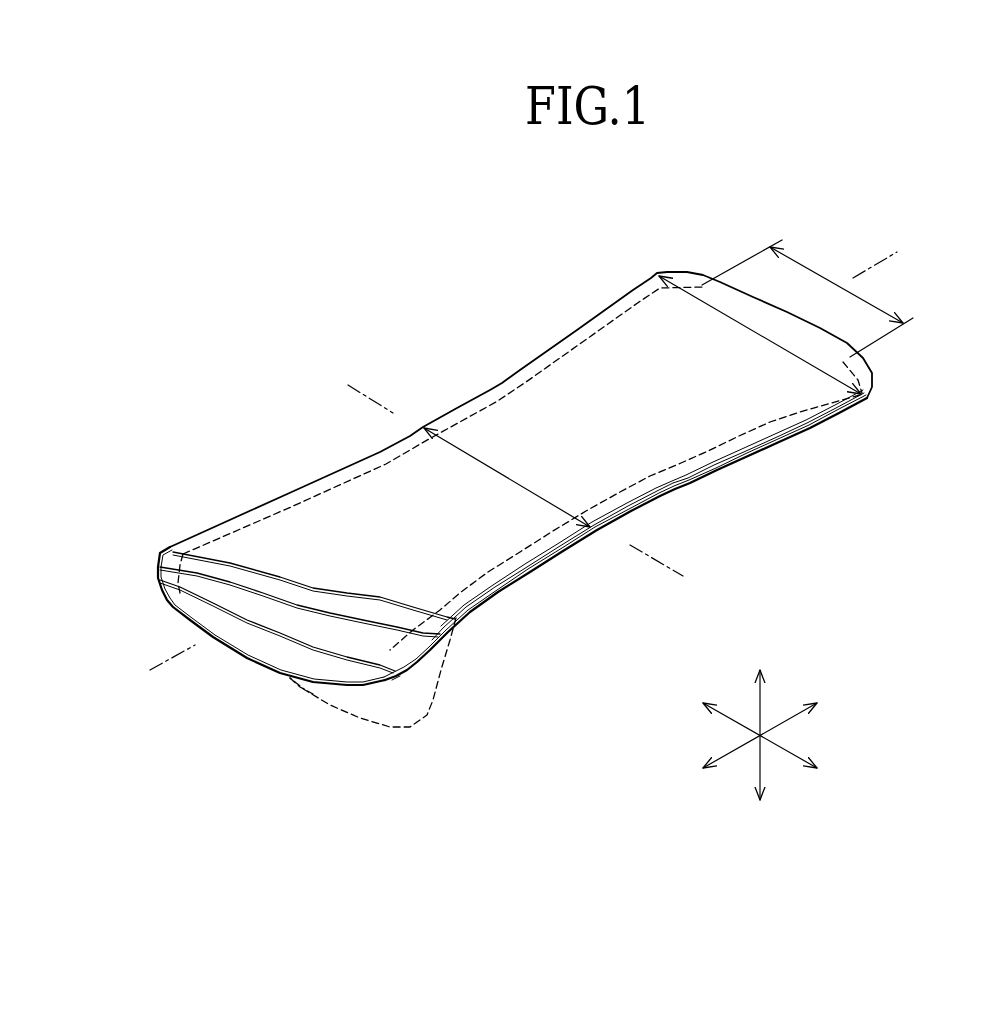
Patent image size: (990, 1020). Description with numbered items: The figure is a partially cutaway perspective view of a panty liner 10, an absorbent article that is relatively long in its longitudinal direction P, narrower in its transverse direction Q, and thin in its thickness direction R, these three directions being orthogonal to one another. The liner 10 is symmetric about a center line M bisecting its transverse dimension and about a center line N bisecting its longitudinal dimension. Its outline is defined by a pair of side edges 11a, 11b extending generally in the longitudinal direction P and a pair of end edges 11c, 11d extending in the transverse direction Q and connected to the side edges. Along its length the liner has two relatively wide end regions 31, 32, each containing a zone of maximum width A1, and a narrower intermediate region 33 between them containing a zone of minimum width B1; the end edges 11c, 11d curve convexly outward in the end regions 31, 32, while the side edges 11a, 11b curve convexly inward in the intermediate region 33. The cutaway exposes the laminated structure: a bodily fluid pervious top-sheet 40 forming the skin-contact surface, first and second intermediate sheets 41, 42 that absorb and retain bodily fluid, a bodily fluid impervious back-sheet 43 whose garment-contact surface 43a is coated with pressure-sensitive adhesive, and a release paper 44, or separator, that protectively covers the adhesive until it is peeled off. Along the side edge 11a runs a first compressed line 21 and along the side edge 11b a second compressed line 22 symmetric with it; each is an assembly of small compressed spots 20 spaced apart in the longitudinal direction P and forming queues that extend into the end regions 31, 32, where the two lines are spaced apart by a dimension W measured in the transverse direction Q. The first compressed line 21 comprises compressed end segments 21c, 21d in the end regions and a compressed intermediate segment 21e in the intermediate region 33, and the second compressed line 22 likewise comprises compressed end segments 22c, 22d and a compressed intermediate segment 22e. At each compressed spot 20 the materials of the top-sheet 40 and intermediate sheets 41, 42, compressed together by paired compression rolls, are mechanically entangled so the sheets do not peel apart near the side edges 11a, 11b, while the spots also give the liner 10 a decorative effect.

The panty liner 10 is at (766, 203).
The side edge 11a is at (465, 406).
The side edge 11b is at (592, 535).
The end edge 11c is at (212, 643).
The end edge 11d is at (708, 278).
The small compressed spots 20 is at (597, 329).
The first compressed line 21 is at (578, 345).
The compressed end segment 21c is at (212, 538).
The compressed end segment 21d is at (688, 285).
The compressed intermediate segment 21e is at (463, 423).
The second compressed line 22 is at (750, 433).
The compressed end segment 22c is at (405, 665).
The compressed end segment 22d is at (877, 380).
The compressed intermediate segment 22e is at (597, 510).
The end region 31 is at (216, 615).
The end region 32 is at (782, 322).
The intermediate region 33 is at (390, 478).
The top-sheet 40 is at (277, 530).
The first intermediate sheet 41 is at (198, 565).
The second intermediate sheet 42 is at (172, 545).
The back-sheet 43 is at (188, 598).
The garment-contact surface 43a is at (333, 687).
The release paper 44 is at (293, 677).
The maximum width A1 is at (733, 320).
The minimum width B1 is at (490, 468).
The dimension W is at (803, 262).
The center line M is at (893, 255).
The center line N is at (358, 388).
The thickness direction R is at (762, 702).
The longitudinal direction P is at (790, 722).
The transverse direction Q is at (785, 755).